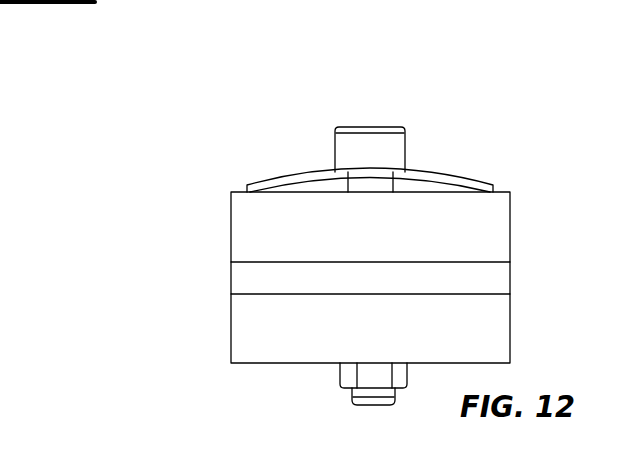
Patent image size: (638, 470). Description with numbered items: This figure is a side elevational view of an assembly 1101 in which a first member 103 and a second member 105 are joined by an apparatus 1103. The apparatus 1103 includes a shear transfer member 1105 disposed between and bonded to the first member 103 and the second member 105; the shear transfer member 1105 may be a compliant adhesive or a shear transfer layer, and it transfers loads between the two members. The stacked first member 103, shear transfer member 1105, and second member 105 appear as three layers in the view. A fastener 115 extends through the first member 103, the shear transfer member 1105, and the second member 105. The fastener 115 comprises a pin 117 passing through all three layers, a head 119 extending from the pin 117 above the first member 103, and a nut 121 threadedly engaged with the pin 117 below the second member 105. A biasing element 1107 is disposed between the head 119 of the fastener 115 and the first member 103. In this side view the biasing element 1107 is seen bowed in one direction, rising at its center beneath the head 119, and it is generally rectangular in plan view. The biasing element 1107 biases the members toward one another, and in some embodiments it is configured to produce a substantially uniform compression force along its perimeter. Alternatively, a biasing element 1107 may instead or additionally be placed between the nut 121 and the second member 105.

The assembly 1101 is at (128, 127).
The apparatus 1103 is at (314, 122).
The fastener 115 is at (378, 120).
The head 119 is at (395, 148).
The biasing element 1107 is at (470, 180).
The first member 103 is at (240, 231).
The shear transfer member 1105 is at (246, 282).
The second member 105 is at (243, 328).
The nut 121 is at (350, 377).
The pin 117 is at (376, 400).